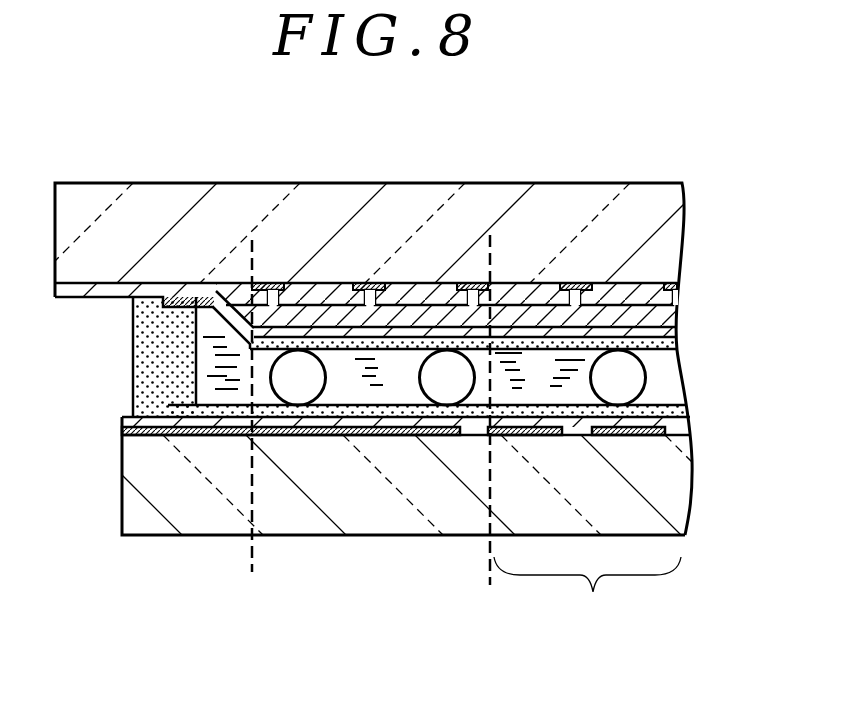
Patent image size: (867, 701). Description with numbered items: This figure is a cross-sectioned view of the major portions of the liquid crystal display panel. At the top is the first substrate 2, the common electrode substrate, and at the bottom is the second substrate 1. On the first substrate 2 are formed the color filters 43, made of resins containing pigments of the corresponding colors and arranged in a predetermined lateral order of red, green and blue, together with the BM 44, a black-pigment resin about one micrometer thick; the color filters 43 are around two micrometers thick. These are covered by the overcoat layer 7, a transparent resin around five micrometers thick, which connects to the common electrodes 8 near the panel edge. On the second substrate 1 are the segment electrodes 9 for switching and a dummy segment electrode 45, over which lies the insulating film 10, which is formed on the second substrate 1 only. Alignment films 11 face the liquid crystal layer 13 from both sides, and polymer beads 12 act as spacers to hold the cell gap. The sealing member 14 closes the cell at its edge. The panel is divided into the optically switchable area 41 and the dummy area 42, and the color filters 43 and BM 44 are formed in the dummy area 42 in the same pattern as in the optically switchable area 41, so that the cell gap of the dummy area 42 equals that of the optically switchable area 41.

The second substrate 1 is at (667, 502).
The first substrate 2 is at (678, 242).
The overcoat layer 7 is at (229, 288).
The common electrodes 8 is at (80, 296).
The segment electrodes 9 is at (627, 436).
The insulating film 10 is at (122, 422).
The alignment films 11 is at (670, 344).
The polymer beads 12 is at (638, 378).
The liquid crystal layer 13 is at (347, 382).
The sealing member 14 is at (140, 368).
The optically switchable area 41 is at (587, 592).
The dummy area 42 is at (490, 557).
The color filters 43 is at (526, 292).
The BM 44 is at (578, 290).
The dummy segment electrode 45 is at (122, 432).